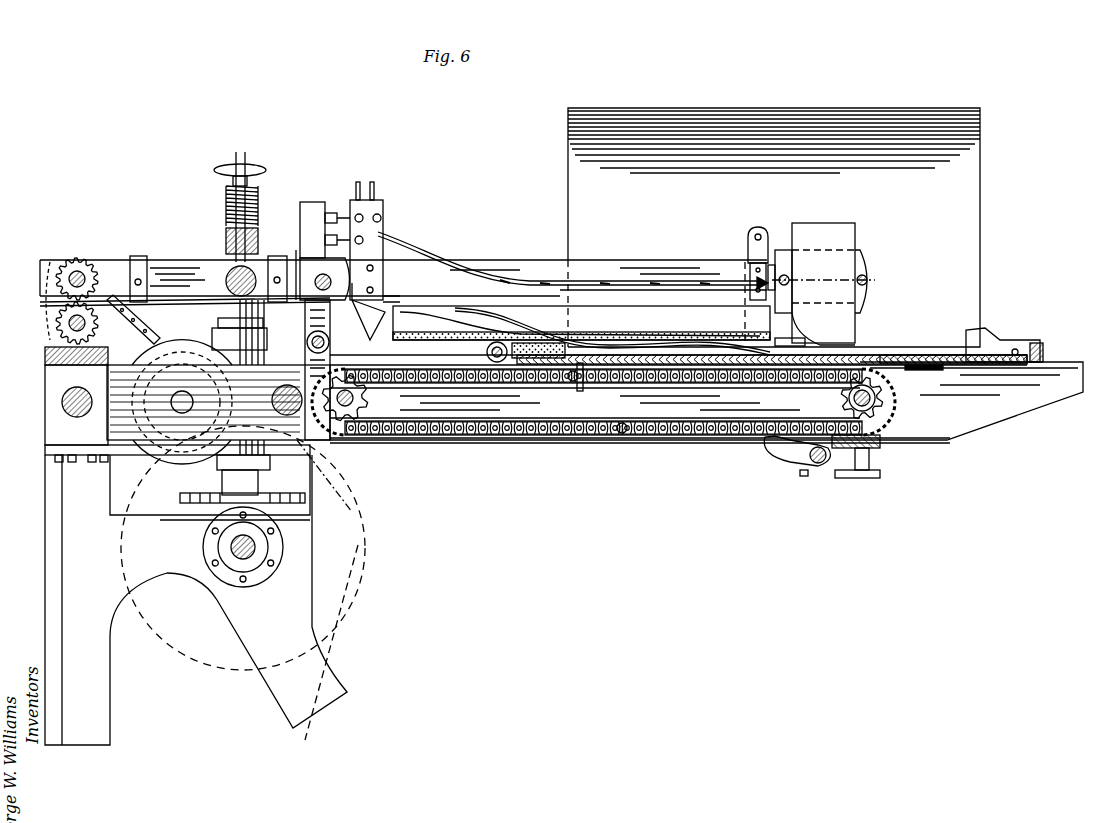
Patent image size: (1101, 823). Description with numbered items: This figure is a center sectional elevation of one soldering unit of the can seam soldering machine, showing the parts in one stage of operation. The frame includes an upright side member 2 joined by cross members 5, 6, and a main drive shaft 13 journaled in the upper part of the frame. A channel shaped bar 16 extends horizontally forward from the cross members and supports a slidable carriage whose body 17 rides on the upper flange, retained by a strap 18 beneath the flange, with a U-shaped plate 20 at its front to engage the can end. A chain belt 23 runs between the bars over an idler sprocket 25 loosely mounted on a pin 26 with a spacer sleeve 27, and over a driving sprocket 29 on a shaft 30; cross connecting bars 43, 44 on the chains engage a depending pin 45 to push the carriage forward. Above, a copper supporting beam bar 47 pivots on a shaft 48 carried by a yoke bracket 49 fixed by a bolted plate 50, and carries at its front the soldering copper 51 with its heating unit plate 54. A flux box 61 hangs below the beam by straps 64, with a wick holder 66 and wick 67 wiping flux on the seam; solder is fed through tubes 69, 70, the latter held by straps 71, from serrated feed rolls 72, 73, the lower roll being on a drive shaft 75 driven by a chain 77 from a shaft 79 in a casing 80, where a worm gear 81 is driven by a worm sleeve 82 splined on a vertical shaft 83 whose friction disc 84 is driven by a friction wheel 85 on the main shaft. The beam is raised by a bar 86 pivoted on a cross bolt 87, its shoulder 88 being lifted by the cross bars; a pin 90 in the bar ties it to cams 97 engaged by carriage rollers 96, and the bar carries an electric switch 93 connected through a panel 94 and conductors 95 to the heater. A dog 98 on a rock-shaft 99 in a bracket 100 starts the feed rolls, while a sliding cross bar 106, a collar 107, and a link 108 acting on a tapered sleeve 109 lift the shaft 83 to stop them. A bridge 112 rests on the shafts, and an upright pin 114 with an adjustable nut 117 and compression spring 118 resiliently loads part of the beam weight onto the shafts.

The upright side member 2 is at (268, 682).
The cross member 5 is at (45, 404).
The cross member 6 is at (330, 448).
The main drive shaft 13 is at (232, 560).
The channel shaped bar 16 is at (490, 444).
The carriage body 17 is at (920, 354).
The strap 18 is at (678, 383).
The U-shaped plate 20 is at (1000, 333).
The chain belt 23 is at (540, 437).
The idler sprocket 25 is at (840, 401).
The pin 26 is at (876, 405).
The spacer sleeve 27 is at (878, 393).
The driving sprocket 29 is at (368, 405).
The shaft 30 is at (368, 392).
The cross connecting bar 43 is at (568, 382).
The cross connecting bar 44 is at (622, 436).
The pin 45 is at (584, 388).
The beam bar 47 is at (173, 266).
The shaft 48 is at (72, 274).
The yoke bracket 49 is at (44, 357).
The bolted plate 50 is at (46, 452).
The soldering copper 51 is at (834, 224).
The plate 54 is at (868, 264).
The flux box 61 is at (545, 307).
The strap 64 is at (750, 247).
The wick holder 66 is at (448, 328).
The wick 67 is at (787, 347).
The solder feed tube 69 is at (490, 312).
The solder feed tube 70 is at (390, 298).
The strap 71 is at (275, 262).
The solder feed roll 72 is at (92, 264).
The solder feed roll 73 is at (52, 296).
The drive shaft 75 is at (62, 318).
The chain 77 is at (137, 330).
The shaft 79 is at (170, 412).
The casing 80 is at (145, 482).
The worm gear 81 is at (88, 463).
The worm sleeve 82 is at (345, 478).
The vertical shaft 83 is at (228, 268).
The friction disc 84 is at (312, 516).
The friction wheel 85 is at (366, 574).
The bar 86 is at (300, 256).
The cross bolt 87 is at (318, 274).
The shoulder 88 is at (296, 390).
The pin 90 is at (332, 346).
The electric switch 93 is at (320, 204).
The panel 94 is at (383, 206).
The conductor 95 is at (592, 278).
The roller 96 is at (495, 362).
The cam 97 is at (360, 320).
The dog 98 is at (776, 456).
The rock-shaft 99 is at (820, 464).
The bracket 100 is at (880, 446).
The cross bar 106 is at (900, 353).
The adjustable collar 107 is at (945, 369).
The link 108 is at (212, 338).
The tapered sleeve 109 is at (218, 323).
The bridge 112 is at (226, 240).
The upright pin 114 is at (259, 214).
The adjustable nut 117 is at (236, 166).
The compression spring 118 is at (232, 210).